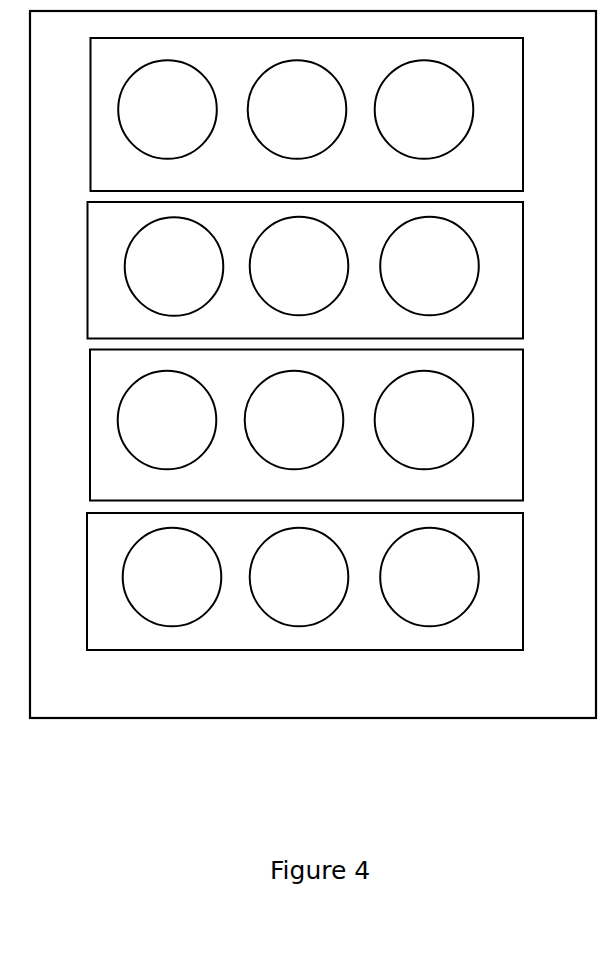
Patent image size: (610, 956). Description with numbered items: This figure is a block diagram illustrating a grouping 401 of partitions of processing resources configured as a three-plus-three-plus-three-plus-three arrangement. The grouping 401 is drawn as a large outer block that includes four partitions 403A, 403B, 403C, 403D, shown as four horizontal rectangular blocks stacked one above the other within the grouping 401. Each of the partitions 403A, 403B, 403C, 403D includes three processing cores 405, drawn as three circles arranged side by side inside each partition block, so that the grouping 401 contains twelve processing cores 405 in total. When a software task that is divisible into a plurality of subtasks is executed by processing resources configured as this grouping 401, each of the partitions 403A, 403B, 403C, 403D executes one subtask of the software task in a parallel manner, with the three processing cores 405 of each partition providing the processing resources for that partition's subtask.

The grouping 401 is at (91, 700).
The partition 403A is at (154, 182).
The partition 403B is at (148, 332).
The partition 403C is at (154, 492).
The partition 403D is at (154, 644).
The processing core 405 is at (188, 122).